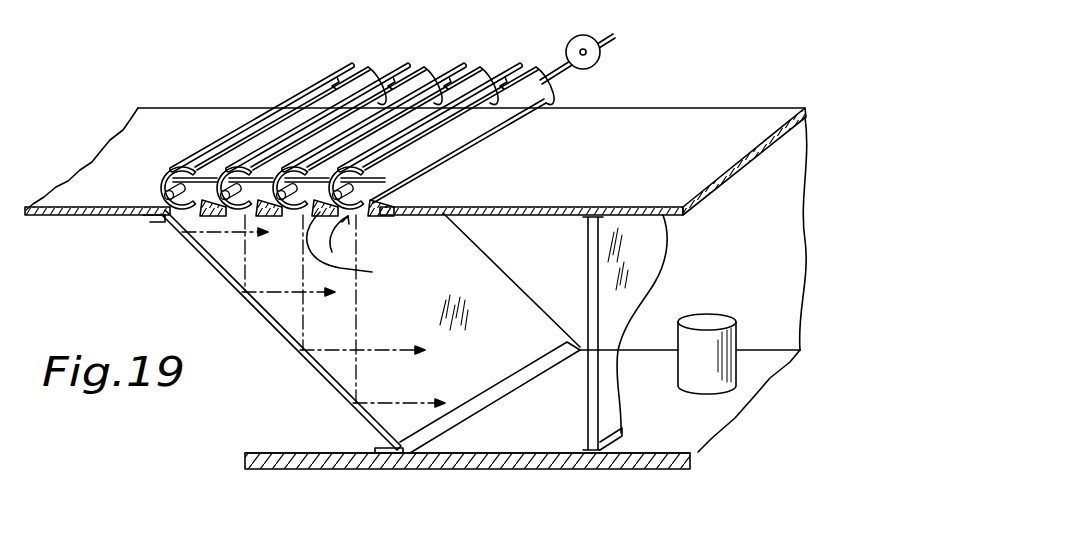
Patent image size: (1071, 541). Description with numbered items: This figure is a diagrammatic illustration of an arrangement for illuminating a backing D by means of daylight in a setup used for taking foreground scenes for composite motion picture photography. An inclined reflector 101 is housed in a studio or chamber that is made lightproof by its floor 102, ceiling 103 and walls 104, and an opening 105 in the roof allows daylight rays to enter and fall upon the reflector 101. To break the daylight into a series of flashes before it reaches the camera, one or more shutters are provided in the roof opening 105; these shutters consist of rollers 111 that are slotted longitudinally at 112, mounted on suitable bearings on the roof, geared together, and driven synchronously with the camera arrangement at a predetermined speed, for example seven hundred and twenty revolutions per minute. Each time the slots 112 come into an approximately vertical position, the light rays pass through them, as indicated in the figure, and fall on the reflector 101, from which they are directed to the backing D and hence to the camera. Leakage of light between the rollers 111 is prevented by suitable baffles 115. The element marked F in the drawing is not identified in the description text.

The inclined reflector 101 is at (302, 360).
The floor 102 is at (522, 341).
The ceiling 103 is at (705, 128).
The walls 104 is at (703, 324).
The opening 105 is at (345, 246).
The rollers 111 is at (400, 162).
The slots 112 is at (522, 67).
The baffles 115 is at (368, 248).
The backing D is at (547, 333).
The cylindrical element F is at (735, 335).